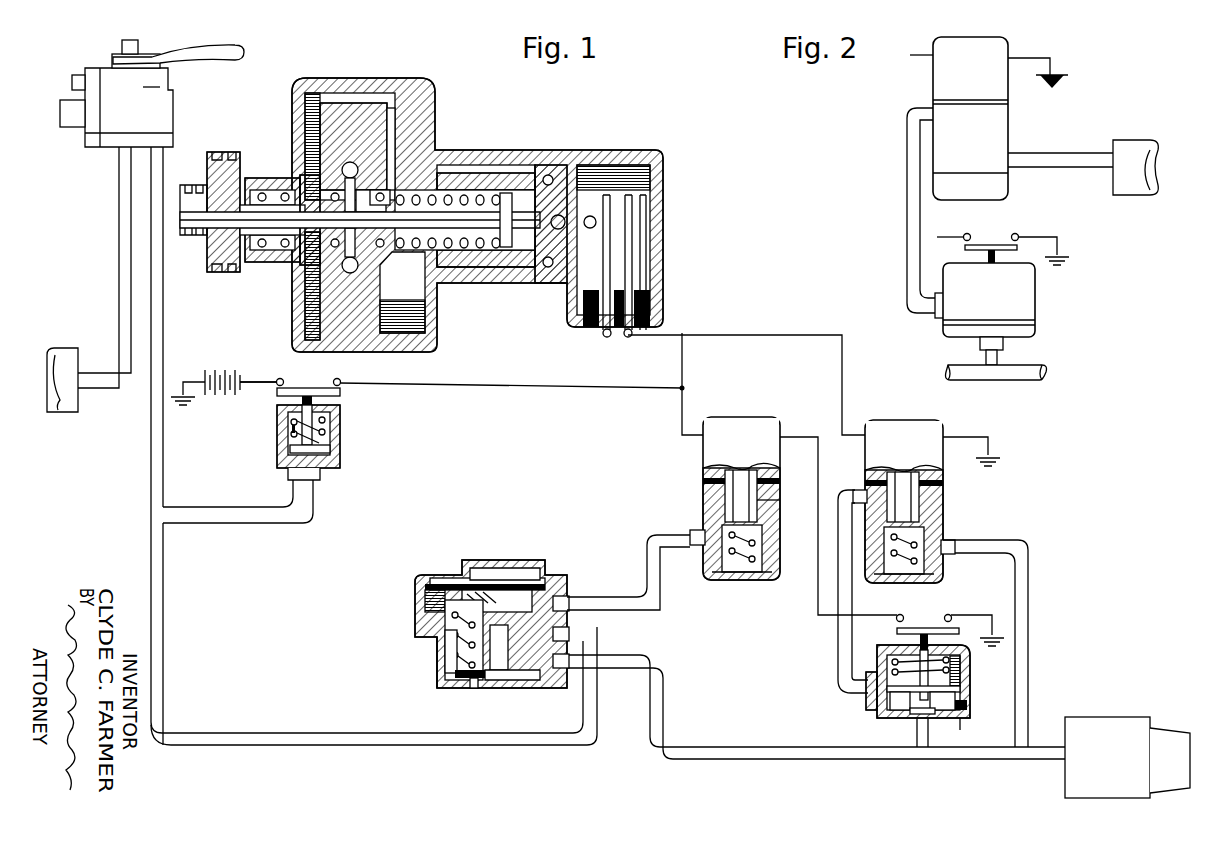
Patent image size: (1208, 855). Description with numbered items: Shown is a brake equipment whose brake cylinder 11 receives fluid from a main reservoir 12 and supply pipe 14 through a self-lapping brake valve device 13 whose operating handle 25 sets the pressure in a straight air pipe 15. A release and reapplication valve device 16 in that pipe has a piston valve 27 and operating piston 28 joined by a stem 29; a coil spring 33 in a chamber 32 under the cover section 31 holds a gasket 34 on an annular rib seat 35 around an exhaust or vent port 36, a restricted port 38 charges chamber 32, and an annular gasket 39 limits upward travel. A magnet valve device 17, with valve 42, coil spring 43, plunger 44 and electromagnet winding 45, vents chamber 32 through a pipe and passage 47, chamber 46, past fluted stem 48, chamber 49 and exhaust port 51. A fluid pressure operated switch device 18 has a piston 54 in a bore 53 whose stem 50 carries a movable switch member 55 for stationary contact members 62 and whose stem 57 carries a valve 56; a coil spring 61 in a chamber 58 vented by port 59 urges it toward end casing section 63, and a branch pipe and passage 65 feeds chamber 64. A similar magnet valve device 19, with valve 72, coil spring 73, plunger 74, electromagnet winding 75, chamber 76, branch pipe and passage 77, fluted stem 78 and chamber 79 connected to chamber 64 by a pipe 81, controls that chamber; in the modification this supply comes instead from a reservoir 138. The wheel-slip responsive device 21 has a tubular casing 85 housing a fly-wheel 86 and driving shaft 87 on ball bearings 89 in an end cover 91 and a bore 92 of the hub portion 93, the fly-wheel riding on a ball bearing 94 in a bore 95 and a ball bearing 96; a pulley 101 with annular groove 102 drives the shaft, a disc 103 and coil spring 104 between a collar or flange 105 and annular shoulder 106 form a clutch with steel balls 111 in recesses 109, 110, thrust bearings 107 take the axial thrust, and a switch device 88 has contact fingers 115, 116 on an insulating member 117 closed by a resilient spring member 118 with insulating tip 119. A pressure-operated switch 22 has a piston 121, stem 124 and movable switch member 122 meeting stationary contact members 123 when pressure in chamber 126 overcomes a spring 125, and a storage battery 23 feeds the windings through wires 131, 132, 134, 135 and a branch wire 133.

In FIG. 1, the brake cylinder 11 is at (1089, 719).
In FIG. 1, the main reservoir 12 is at (70, 421).
In FIG. 1, the brake valve device 13 is at (180, 105).
In FIG. 1, the supply pipe 14 is at (128, 202).
In FIG. 1, the straight air pipe 15 is at (158, 576).
In FIG. 2, the straight air pipe 15 is at (1035, 376).
In FIG. 1, the release and reapplication valve device 16 is at (508, 558).
In FIG. 1, the magnet valve device 17 is at (749, 408).
In FIG. 1, the fluid pressure operated switch device 18 is at (875, 722).
In FIG. 2, the fluid pressure operated switch device 18 is at (1043, 306).
In FIG. 1, the magnet valve device 19 is at (893, 419).
In FIG. 2, the magnet valve device 19 is at (1019, 43).
In FIG. 1, the wheel-slip responsive device 21 is at (359, 84).
In FIG. 1, the pressure-operated switch 22 is at (347, 444).
In FIG. 1, the storage battery 23 is at (206, 368).
In FIG. 1, the operating handle 25 is at (218, 52).
In FIG. 1, the piston valve 27 is at (436, 660).
In FIG. 1, the operating piston 28 is at (440, 612).
In FIG. 1, the stem 29 is at (440, 640).
In FIG. 1, the cover section 31 is at (452, 574).
In FIG. 1, the chamber 32 is at (424, 596).
In FIG. 1, the coil spring 33 is at (497, 600).
In FIG. 1, the gasket 34 is at (505, 688).
In FIG. 1, the annular rib seat 35 is at (462, 688).
In FIG. 1, the exhaust or vent port 36 is at (476, 690).
In FIG. 1, the restricted port 38 is at (513, 647).
In FIG. 1, the annular gasket 39 is at (432, 582).
In FIG. 1, the valve 42 is at (730, 528).
In FIG. 1, the coil spring 43 is at (740, 578).
In FIG. 1, the plunger 44 is at (712, 466).
In FIG. 1, the electromagnet winding 45 is at (718, 445).
In FIG. 1, the chamber 46 is at (700, 548).
In FIG. 1, the pipe and passage 47 is at (584, 602).
In FIG. 1, the fluted stem 48 is at (708, 480).
In FIG. 1, the chamber 49 is at (770, 474).
In FIG. 1, the stem 50 is at (898, 648).
In FIG. 1, the exhaust port 51 is at (775, 498).
In FIG. 1, the bore 53 is at (892, 660).
In FIG. 1, the piston 54 is at (968, 702).
In FIG. 1, the movable switch member 55 is at (948, 633).
In FIG. 2, the movable switch member 55 is at (963, 248).
In FIG. 1, the valve 56 is at (943, 697).
In FIG. 1, the stem 57 is at (903, 697).
In FIG. 1, the chamber 58 is at (960, 660).
In FIG. 1, the port 59 is at (970, 682).
In FIG. 1, the coil spring 61 is at (887, 676).
In FIG. 1, the stationary contact members 62 is at (946, 615).
In FIG. 2, the stationary contact members 62 is at (1013, 235).
In FIG. 1, the end casing section 63 is at (937, 716).
In FIG. 1, the chamber 64 is at (968, 718).
In FIG. 1, the branch pipe and passage 65 is at (916, 732).
In FIG. 2, the branch pipe and passage 65 is at (984, 355).
In FIG. 1, the valve 72 is at (935, 519).
In FIG. 1, the coil spring 73 is at (900, 580).
In FIG. 1, the plunger 74 is at (875, 470).
In FIG. 1, the electromagnet winding 75 is at (880, 450).
In FIG. 1, the chamber 76 is at (945, 560).
In FIG. 1, the branch pipe and passage 77 is at (1018, 572).
In FIG. 2, the branch pipe and passage 77 is at (1050, 165).
In FIG. 1, the fluted stem 78 is at (930, 506).
In FIG. 1, the chamber 79 is at (932, 476).
In FIG. 1, the pipe 81 is at (842, 528).
In FIG. 2, the pipe 81 is at (908, 136).
In FIG. 1, the tubular casing 85 is at (428, 86).
In FIG. 1, the fly-wheel 86 is at (305, 128).
In FIG. 1, the driving shaft 87 is at (278, 265).
In FIG. 1, the switch device 88 is at (648, 203).
In FIG. 1, the ball bearings 89 is at (292, 186).
In FIG. 1, the end cover 91 is at (292, 320).
In FIG. 1, the bore 92 is at (478, 192).
In FIG. 1, the hub portion 93 is at (452, 178).
In FIG. 1, the ball bearing 94 is at (552, 170).
In FIG. 1, the bore 95 is at (546, 270).
In FIG. 1, the ball bearing 96 is at (402, 292).
In FIG. 1, the pulley 101 is at (205, 272).
In FIG. 1, the annular groove 102 is at (225, 152).
In FIG. 1, the disc 103 is at (312, 163).
In FIG. 1, the coil spring 104 is at (468, 248).
In FIG. 1, the collar or flange 105 is at (505, 250).
In FIG. 1, the annular shoulder 106 is at (372, 195).
In FIG. 1, the thrust bearings 107 is at (382, 195).
In FIG. 1, the recesses 109 is at (353, 146).
In FIG. 1, the recesses 110 is at (369, 202).
In FIG. 1, the steel ball 111 is at (380, 172).
In FIG. 1, the contact finger 115 is at (612, 250).
In FIG. 1, the contact finger 116 is at (634, 270).
In FIG. 1, the insulating member 117 is at (652, 308).
In FIG. 1, the resilient spring member 118 is at (648, 286).
In FIG. 1, the tip 119 is at (600, 210).
In FIG. 1, the piston 121 is at (340, 455).
In FIG. 1, the movable switch member 122 is at (341, 394).
In FIG. 1, the stationary contact members 123 is at (284, 384).
In FIG. 1, the stem 124 is at (290, 430).
In FIG. 1, the spring 125 is at (326, 422).
In FIG. 1, the chamber 126 is at (322, 476).
In FIG. 1, the wire 131 is at (253, 380).
In FIG. 1, the wire 132 is at (445, 387).
In FIG. 1, the branch wire 133 is at (680, 360).
In FIG. 1, the wire 134 is at (722, 334).
In FIG. 2, the wire 134 is at (914, 57).
In FIG. 1, the wire 135 is at (805, 430).
In FIG. 2, the wire 135 is at (938, 236).
In FIG. 2, the reservoir 138 is at (1130, 142).